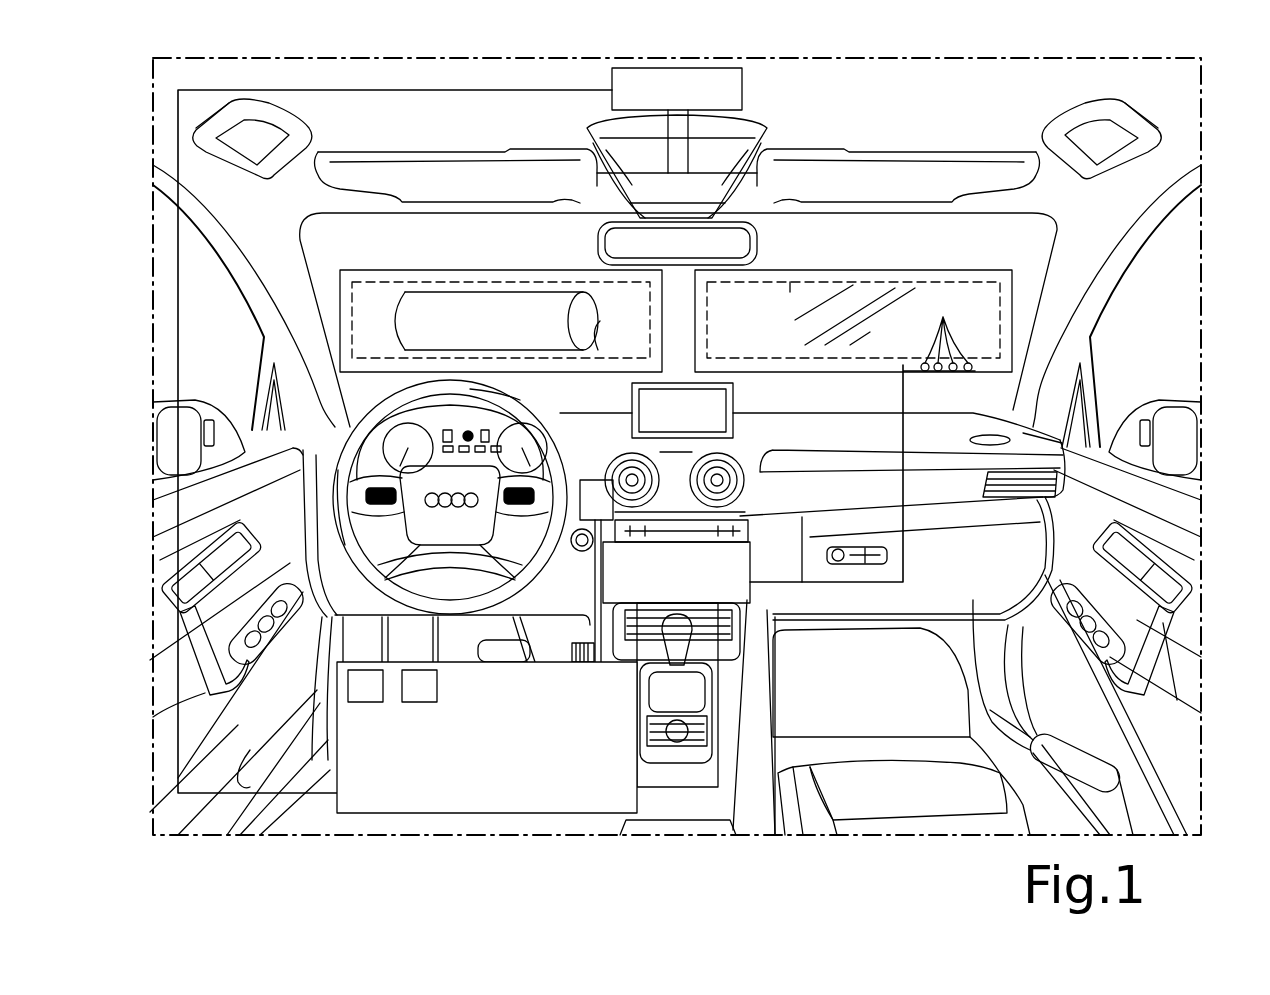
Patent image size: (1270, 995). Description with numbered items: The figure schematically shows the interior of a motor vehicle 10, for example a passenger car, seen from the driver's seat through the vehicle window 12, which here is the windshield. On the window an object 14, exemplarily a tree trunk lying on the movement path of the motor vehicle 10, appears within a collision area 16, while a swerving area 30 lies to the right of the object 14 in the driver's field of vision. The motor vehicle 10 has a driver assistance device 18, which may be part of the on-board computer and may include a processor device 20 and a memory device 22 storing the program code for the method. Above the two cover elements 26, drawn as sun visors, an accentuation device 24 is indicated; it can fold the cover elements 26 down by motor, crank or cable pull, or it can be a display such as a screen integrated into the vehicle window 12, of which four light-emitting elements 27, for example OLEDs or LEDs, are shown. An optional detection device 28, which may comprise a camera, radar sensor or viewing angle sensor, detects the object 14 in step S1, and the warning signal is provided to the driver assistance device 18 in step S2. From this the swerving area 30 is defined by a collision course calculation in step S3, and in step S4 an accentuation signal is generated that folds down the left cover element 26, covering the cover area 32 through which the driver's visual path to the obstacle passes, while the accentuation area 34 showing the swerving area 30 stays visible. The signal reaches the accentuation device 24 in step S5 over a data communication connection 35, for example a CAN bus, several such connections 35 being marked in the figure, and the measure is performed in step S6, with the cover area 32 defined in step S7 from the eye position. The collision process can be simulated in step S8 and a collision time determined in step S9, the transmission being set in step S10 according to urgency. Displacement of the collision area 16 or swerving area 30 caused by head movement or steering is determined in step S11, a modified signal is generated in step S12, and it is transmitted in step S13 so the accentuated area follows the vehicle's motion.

The motor vehicle 10 is at (1107, 307).
The vehicle window 12 is at (1050, 253).
The object 14 is at (490, 290).
The collision area 16 is at (596, 290).
The driver assistance device 18 is at (337, 747).
The processor device 20 is at (365, 670).
The memory device 22 is at (420, 670).
The accentuation device 24 is at (744, 88).
The cover element 26 is at (447, 150).
The light-emitting elements 27 is at (862, 433).
The detection device 28 is at (583, 521).
The swerving area 30 is at (768, 282).
The cover area 32 is at (440, 272).
The accentuation area 34 is at (918, 272).
The data communication connection 35 is at (620, 162).
The method step of detecting the object S1 is at (597, 480).
The method step of performing the accentuation measure S6 is at (720, 357).
The method step of providing the warning signal S2 is at (487, 737).
The method step of defining the swerving area S3 is at (487, 737).
The method step of generating the accentuation signal S4 is at (487, 737).
The method step of transmitting the accentuation signal S5 is at (487, 737).
The method step of defining the cover area S7 is at (487, 737).
The method step of simulating the collision process S8 is at (487, 737).
The method step of determining the collision time S9 is at (487, 737).
The method step of setting the transmission S10 is at (487, 737).
The method step of determining relative displacement S11 is at (487, 737).
The method step of generating a modified accentuation signal S12 is at (487, 737).
The method step of transmitting the changed accentuation signal S13 is at (487, 737).